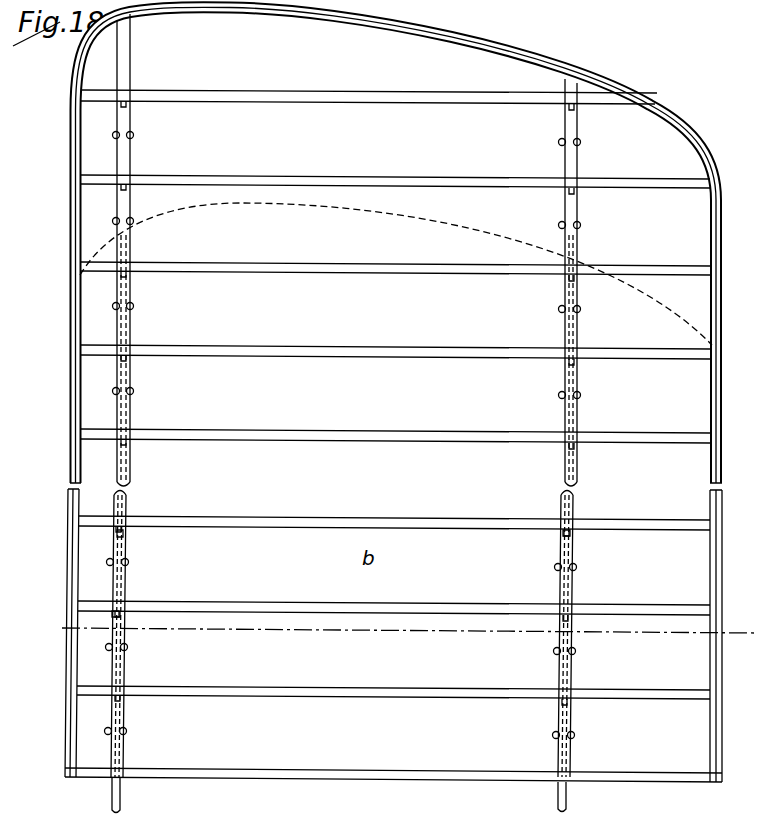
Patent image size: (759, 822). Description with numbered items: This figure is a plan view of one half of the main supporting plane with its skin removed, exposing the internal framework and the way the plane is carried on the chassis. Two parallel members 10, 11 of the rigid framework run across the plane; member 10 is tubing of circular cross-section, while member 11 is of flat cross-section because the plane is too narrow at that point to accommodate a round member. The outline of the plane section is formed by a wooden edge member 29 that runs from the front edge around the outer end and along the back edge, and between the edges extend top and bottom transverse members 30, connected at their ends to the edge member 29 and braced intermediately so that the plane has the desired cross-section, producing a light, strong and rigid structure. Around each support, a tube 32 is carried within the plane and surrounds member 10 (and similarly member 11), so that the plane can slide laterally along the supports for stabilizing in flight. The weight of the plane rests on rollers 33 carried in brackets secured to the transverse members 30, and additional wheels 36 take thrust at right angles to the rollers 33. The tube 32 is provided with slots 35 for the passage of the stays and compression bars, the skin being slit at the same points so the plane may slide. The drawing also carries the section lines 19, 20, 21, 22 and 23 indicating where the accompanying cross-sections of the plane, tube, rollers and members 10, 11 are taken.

The parallel member 10 is at (120, 802).
The parallel member 11 is at (558, 800).
The section line 19— 19 is at (396, 632).
The section line 20— 20 is at (145, 306).
The section line 21— 21 is at (140, 533).
The section line 22— 22 is at (121, 668).
The section line 23— 23 is at (590, 735).
The edge member 29 is at (70, 560).
The transverse member 30 is at (400, 431).
The tube 32 is at (130, 466).
The roller 33 is at (114, 612).
The slot 35 is at (127, 331).
The additional wheel 36 is at (107, 732).